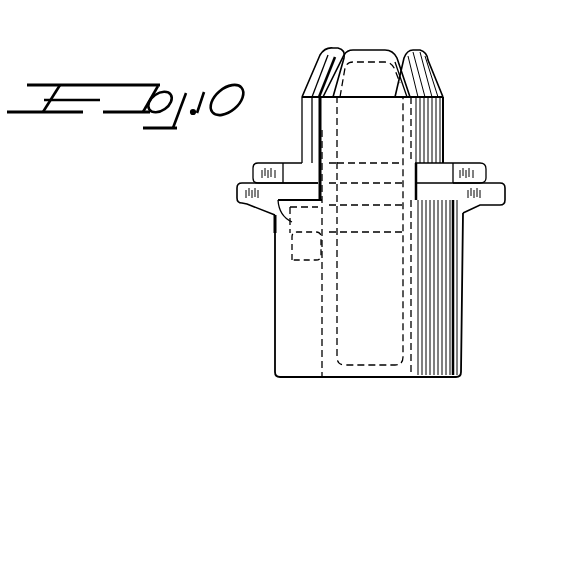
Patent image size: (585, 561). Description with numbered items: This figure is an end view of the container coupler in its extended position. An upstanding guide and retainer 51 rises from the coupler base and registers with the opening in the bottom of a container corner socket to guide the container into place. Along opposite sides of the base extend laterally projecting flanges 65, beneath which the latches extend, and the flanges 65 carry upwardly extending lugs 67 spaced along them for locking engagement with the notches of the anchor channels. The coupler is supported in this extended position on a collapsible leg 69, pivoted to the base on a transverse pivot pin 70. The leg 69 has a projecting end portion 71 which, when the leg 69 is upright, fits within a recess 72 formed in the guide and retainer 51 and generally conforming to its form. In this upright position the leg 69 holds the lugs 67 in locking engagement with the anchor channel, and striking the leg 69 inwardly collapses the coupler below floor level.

The guide and retainer 51 is at (302, 122).
The flange 65 is at (242, 190).
The lug 67 is at (273, 161).
The collapsible leg 69 is at (288, 297).
The pivot pin 70 is at (383, 235).
The projecting end portion 71 is at (378, 55).
The recess 72 is at (337, 53).